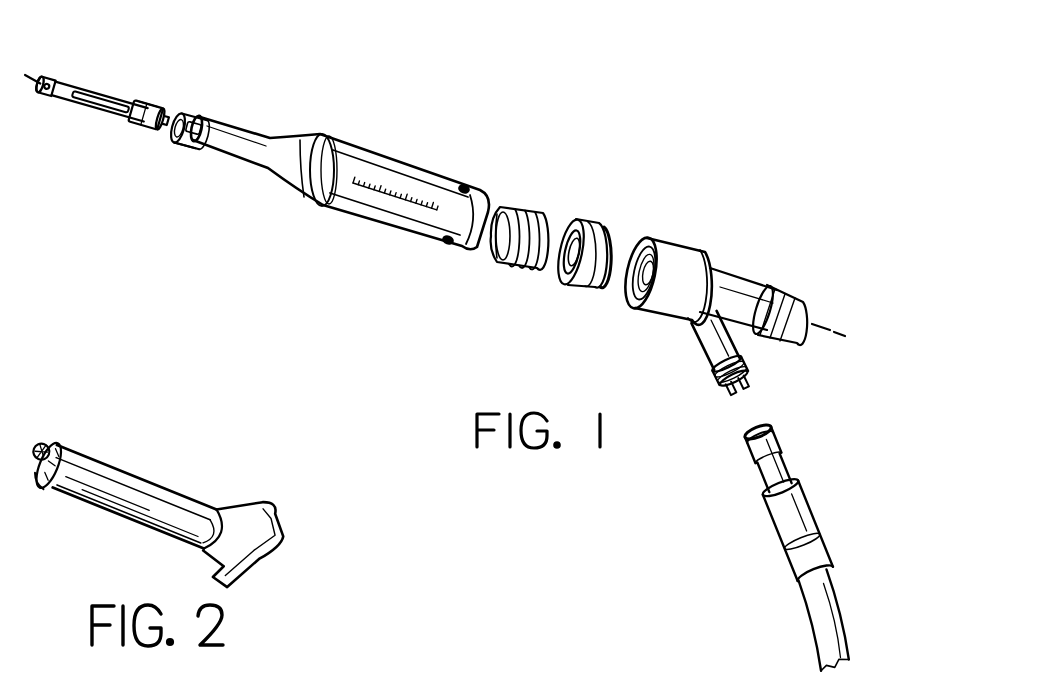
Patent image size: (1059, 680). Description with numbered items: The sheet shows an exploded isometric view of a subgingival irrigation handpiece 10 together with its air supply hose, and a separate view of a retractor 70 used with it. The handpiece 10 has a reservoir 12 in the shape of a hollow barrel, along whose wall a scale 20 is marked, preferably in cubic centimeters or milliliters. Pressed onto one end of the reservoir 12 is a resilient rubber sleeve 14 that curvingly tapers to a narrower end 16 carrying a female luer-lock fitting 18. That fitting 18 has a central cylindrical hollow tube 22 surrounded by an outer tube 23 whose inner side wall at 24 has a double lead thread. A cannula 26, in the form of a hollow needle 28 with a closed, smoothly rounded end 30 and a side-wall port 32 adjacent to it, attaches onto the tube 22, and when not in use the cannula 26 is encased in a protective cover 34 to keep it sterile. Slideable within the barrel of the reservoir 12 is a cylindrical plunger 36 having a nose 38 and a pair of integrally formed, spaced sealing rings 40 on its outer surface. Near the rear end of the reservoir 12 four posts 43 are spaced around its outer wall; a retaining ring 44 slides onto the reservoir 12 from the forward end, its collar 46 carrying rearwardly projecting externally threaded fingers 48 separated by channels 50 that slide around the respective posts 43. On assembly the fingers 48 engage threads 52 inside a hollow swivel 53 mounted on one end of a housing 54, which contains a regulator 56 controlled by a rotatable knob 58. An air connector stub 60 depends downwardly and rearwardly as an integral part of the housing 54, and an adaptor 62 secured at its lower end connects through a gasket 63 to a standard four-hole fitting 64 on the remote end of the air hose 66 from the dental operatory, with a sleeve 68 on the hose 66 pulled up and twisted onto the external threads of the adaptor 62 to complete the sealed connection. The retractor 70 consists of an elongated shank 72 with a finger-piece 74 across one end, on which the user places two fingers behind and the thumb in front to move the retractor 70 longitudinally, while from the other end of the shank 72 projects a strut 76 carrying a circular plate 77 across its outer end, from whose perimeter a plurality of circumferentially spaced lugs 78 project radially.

In FIG. 1, the subgingival irrigation handpiece 10 is at (339, 160).
In FIG. 1, the reservoir 12 is at (435, 172).
In FIG. 1, the sleeve 14 is at (234, 132).
In FIG. 1, the narrower end 16 is at (220, 115).
In FIG. 1, the female luer-lock fitting 18 is at (195, 107).
In FIG. 1, the scale 20 is at (378, 190).
In FIG. 1, the central cylindrical hollow tube 22 is at (183, 111).
In FIG. 1, the outer tube 23 is at (180, 145).
In FIG. 1, the double lead thread 24 is at (202, 160).
In FIG. 1, the cannula 26 is at (133, 100).
In FIG. 1, the hollow needle 28 is at (112, 118).
In FIG. 1, the closed smoothly-rounded end 30 is at (62, 80).
In FIG. 1, the port 32 is at (65, 93).
In FIG. 1, the protective cover 34 is at (112, 88).
In FIG. 1, the plunger 36 is at (538, 265).
In FIG. 1, the nose 38 is at (496, 216).
In FIG. 1, the sealing rings 40 is at (538, 210).
In FIG. 1, the posts 43 is at (452, 248).
In FIG. 1, the retaining ring 44 is at (598, 213).
In FIG. 1, the collar 46 is at (572, 287).
In FIG. 1, the externally threaded fingers 48 is at (618, 244).
In FIG. 1, the channel 50 is at (603, 278).
In FIG. 1, the threads 52 is at (688, 278).
In FIG. 1, the swivel 53 is at (710, 260).
In FIG. 1, the housing 54 is at (713, 292).
In FIG. 1, the regulator 56 is at (784, 285).
In FIG. 1, the rotatable knob 58 is at (800, 328).
In FIG. 1, the air connector stub 60 is at (703, 362).
In FIG. 1, the adaptor 62 is at (746, 364).
In FIG. 1, the gasket 63 is at (757, 388).
In FIG. 1, the 4-hole fitting 64 is at (775, 460).
In FIG. 1, the air hose 66 is at (830, 613).
In FIG. 1, the sleeve 68 is at (790, 517).
In FIG. 2, the retractor 70 is at (107, 480).
In FIG. 2, the elongated shank 72 is at (217, 513).
In FIG. 2, the finger-piece 74 is at (273, 534).
In FIG. 2, the strut 76 is at (60, 447).
In FIG. 2, the circular plate 77 is at (42, 473).
In FIG. 2, the lugs 78 is at (37, 447).